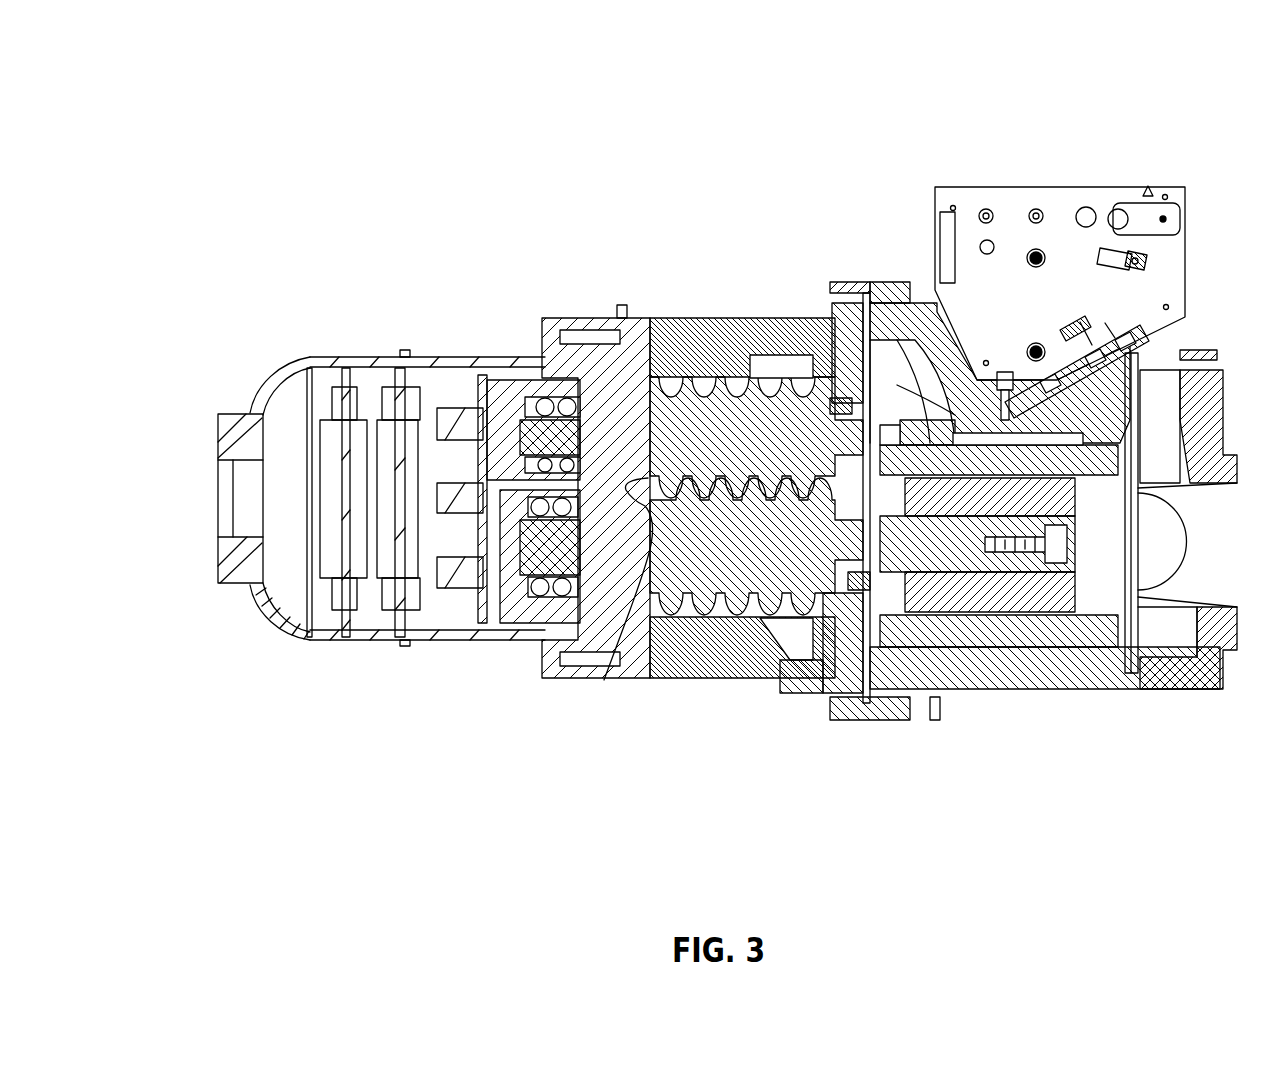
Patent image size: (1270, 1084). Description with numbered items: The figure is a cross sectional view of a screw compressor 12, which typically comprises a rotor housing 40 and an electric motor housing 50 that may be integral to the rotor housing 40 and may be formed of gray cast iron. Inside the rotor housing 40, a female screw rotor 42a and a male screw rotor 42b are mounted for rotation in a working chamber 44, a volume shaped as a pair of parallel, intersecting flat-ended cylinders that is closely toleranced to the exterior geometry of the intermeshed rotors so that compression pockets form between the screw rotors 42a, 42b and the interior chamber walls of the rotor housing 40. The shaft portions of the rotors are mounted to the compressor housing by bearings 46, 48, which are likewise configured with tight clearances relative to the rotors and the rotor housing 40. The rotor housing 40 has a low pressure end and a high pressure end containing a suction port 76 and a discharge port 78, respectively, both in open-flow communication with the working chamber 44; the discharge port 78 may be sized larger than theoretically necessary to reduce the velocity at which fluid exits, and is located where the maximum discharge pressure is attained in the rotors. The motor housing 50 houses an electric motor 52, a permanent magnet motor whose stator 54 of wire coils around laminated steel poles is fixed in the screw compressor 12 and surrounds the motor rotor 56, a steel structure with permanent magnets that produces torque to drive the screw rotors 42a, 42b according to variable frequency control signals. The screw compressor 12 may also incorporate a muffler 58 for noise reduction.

The screw compressor 12 is at (224, 126).
The rotor housing 40 is at (700, 680).
The female screw rotor 42a is at (756, 437).
The male screw rotor 42b is at (756, 546).
The working chamber 44 is at (668, 382).
The bearings 46 is at (543, 402).
The bearings 48 is at (842, 402).
The electric motor housing 50 is at (1092, 688).
The electric motor 52 is at (1118, 645).
The motor stator 54 is at (999, 546).
The motor rotor 56 is at (990, 545).
The muffler 58 is at (446, 632).
The suction port 76 is at (788, 364).
The discharge port 78 is at (604, 680).